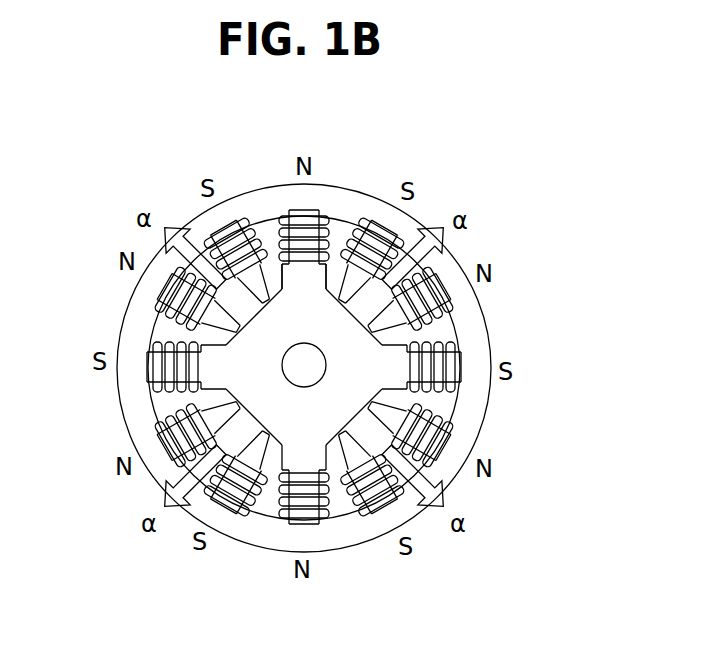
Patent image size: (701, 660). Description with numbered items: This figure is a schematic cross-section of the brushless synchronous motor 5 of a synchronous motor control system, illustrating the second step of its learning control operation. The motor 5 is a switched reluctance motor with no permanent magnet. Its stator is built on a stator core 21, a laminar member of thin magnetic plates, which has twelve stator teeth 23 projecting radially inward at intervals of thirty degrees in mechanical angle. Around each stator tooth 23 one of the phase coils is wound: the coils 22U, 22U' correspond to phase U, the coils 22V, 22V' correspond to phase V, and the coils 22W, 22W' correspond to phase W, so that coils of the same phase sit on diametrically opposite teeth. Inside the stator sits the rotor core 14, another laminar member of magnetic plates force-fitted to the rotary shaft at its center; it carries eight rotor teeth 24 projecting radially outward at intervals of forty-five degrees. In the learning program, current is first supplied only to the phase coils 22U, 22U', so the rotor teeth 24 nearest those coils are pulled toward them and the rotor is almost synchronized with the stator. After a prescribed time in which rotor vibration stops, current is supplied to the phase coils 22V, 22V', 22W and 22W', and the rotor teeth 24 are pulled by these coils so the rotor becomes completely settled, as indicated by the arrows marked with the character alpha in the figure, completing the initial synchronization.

The brushless synchronous motor 5 is at (521, 186).
The rotor core 14 is at (317, 428).
The stator core 21 is at (425, 206).
The phase coil 22U is at (304, 370).
The phase coil 22V is at (304, 372).
The phase coil 22W is at (305, 367).
The phase coil 22U' is at (306, 363).
The phase coil 22V' is at (306, 365).
The phase coil 22W' is at (304, 370).
The stator tooth 23 is at (301, 262).
The rotor tooth 24 is at (348, 290).